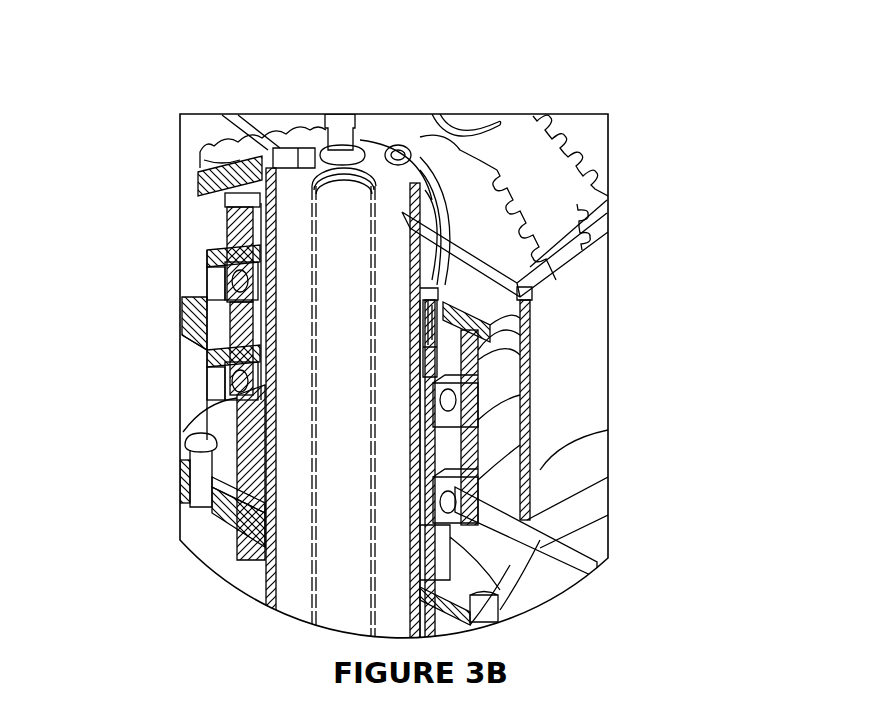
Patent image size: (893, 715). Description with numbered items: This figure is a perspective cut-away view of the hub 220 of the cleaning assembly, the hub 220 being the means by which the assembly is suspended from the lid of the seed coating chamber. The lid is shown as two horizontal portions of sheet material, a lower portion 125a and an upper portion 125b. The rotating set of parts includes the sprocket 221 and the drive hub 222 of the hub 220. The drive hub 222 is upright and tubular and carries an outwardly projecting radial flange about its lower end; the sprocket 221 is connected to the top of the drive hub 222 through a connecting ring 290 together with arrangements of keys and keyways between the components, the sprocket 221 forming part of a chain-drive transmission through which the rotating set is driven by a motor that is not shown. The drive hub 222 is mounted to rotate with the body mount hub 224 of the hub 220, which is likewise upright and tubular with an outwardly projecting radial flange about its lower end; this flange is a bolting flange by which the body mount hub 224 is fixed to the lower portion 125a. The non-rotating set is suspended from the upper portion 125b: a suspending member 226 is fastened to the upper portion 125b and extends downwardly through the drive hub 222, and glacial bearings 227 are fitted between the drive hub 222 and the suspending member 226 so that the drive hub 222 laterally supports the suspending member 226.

The hub 220 is at (738, 220).
The sprocket 221 is at (222, 152).
The drive hub 222 is at (507, 573).
The body mount hub 224 is at (192, 374).
The suspending member 226 is at (262, 569).
The glacial bearings 227 is at (420, 295).
The connecting ring 290 is at (600, 204).
The lower portion 125a is at (583, 530).
The upper portion 125b is at (600, 266).